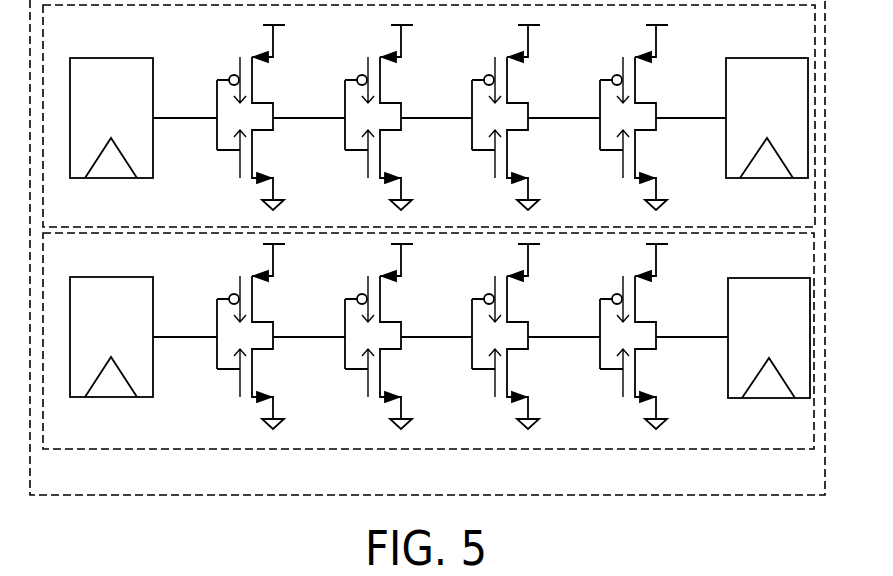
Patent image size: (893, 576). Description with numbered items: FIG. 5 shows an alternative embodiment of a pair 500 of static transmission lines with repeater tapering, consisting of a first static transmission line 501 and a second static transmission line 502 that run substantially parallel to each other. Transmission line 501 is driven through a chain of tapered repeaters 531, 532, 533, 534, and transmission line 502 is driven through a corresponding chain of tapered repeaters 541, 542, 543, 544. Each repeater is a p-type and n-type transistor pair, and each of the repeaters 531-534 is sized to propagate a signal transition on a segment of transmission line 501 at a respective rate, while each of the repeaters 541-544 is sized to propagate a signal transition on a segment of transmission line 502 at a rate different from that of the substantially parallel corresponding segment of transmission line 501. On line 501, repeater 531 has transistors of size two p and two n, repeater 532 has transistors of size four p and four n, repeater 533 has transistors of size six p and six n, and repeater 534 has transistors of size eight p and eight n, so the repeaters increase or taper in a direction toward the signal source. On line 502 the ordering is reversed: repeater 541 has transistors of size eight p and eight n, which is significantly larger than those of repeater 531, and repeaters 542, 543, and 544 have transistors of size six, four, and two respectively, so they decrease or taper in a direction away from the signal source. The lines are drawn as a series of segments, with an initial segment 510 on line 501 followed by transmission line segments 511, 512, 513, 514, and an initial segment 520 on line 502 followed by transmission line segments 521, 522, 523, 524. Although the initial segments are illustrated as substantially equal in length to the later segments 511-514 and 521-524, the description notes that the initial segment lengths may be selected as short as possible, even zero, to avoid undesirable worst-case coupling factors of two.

The pair of static transmission lines 500 is at (102, 485).
The static transmission line 501 is at (103, 46).
The static transmission line 502 is at (797, 440).
The input node of first path 510 is at (186, 117).
The transmission line segment 511 is at (313, 117).
The transmission line segment 512 is at (440, 117).
The transmission line segment 513 is at (568, 117).
The transmission line segment 514 is at (693, 117).
The input node of second path 520 is at (186, 336).
The transmission line segment 521 is at (313, 336).
The transmission line segment 522 is at (440, 336).
The transmission line segment 523 is at (568, 336).
The transmission line segment 524 is at (693, 336).
The repeater 531 is at (217, 135).
The repeater 532 is at (345, 135).
The repeater 533 is at (472, 135).
The repeater 534 is at (600, 135).
The repeater 541 is at (217, 355).
The repeater 542 is at (345, 355).
The repeater 543 is at (472, 355).
The repeater 544 is at (600, 355).